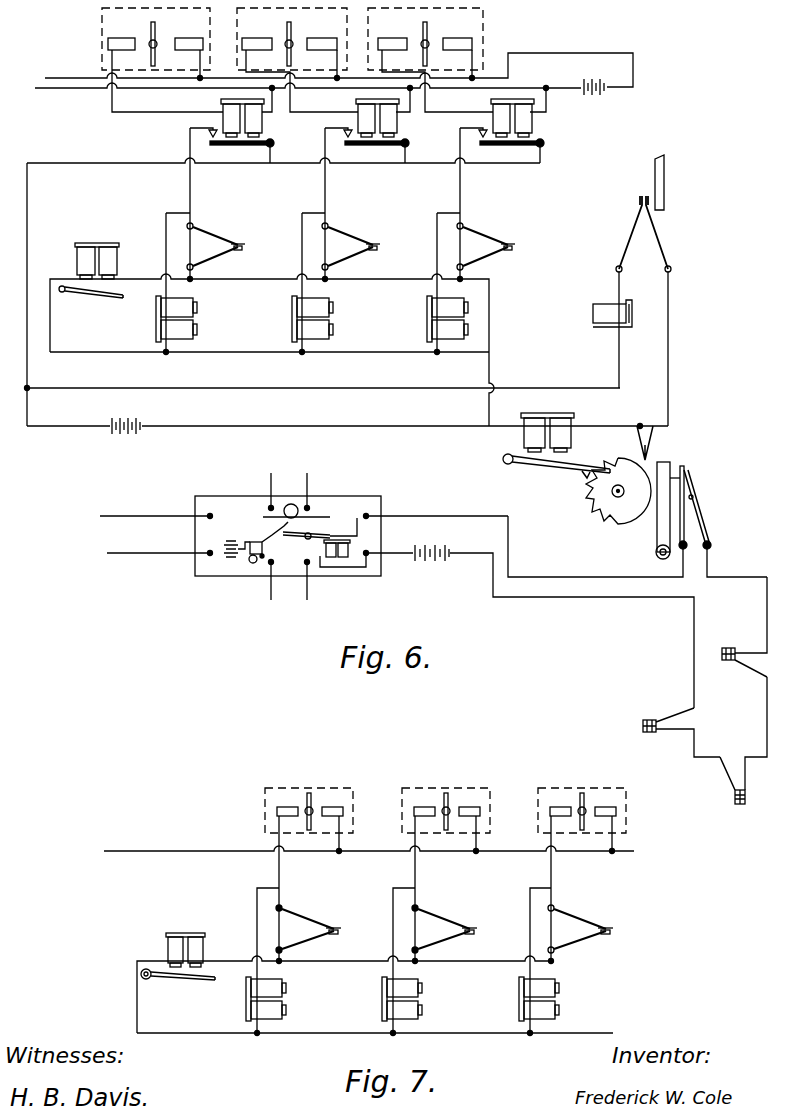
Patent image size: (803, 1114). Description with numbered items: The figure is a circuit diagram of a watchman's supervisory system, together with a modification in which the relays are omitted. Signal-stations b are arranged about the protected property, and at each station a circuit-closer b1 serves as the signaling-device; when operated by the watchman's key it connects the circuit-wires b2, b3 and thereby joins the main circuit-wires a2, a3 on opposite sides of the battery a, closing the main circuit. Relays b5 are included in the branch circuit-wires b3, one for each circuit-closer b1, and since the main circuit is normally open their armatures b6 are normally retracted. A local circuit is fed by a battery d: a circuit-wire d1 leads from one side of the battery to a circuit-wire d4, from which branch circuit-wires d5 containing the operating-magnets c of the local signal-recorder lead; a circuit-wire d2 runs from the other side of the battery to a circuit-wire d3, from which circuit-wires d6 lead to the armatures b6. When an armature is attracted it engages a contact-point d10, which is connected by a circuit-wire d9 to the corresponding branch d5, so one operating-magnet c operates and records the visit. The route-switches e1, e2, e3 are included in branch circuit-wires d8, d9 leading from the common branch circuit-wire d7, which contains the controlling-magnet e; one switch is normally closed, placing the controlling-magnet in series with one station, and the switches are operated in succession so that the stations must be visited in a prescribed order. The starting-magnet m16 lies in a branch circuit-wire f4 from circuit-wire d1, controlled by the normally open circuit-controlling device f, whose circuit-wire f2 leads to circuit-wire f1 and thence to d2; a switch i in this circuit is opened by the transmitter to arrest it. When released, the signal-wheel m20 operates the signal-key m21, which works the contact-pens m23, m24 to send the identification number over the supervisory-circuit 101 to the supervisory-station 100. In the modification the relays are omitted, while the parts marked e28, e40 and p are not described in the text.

In FIG. 6, the signal-station b is at (102, 32).
In FIG. 7, the signal-station b is at (265, 790).
In FIG. 6, the circuit-closer b1 is at (157, 30).
In FIG. 7, the circuit-closer b1 is at (311, 793).
In FIG. 6, the circuit-wire b2 is at (200, 60).
In FIG. 6, the branch circuit-wire b3 is at (113, 60).
In FIG. 6, the relay b5 is at (263, 122).
In FIG. 6, the armature b6 is at (248, 146).
In FIG. 6, the battery a is at (602, 96).
In FIG. 6, the main circuit-wire a2 is at (598, 47).
In FIG. 6, the main circuit-wire a3 is at (566, 87).
In FIG. 6, the battery d is at (128, 418).
In FIG. 6, the circuit-wire d1 is at (368, 428).
In FIG. 6, the circuit-wire d2 is at (80, 430).
In FIG. 6, the circuit-wire d3 is at (301, 166).
In FIG. 7, the circuit-wire d3 is at (178, 851).
In FIG. 6, the circuit-wire d4 is at (250, 352).
In FIG. 7, the circuit-wire d4 is at (348, 1033).
In FIG. 6, the branch circuit-wire d5 is at (166, 238).
In FIG. 7, the branch circuit-wire d5 is at (257, 903).
In FIG. 6, the circuit-wire d6 is at (272, 158).
In FIG. 6, the branch circuit-wire d7 is at (113, 352).
In FIG. 7, the branch circuit-wire d7 is at (190, 1033).
In FIG. 6, the branch circuit-wire d8 is at (210, 208).
In FIG. 7, the branch circuit-wire d8 is at (285, 902).
In FIG. 6, the circuit-wire d9 is at (190, 188).
In FIG. 7, the circuit-wire d9 is at (279, 871).
In FIG. 6, the contact-point d10 is at (212, 125).
In FIG. 6, the controlling-magnet e is at (115, 272).
In FIG. 7, the controlling-magnet e is at (166, 945).
In FIG. 6, the route-switch e1 is at (211, 236).
In FIG. 7, the route-switch e1 is at (316, 925).
In FIG. 6, the route-switch e2 is at (347, 238).
In FIG. 7, the route-switch e2 is at (449, 925).
In FIG. 6, the route-switch e3 is at (483, 238).
In FIG. 7, the route-switch e3 is at (585, 925).
In FIG. 6, the armature lever e28 is at (81, 300).
In FIG. 6, the contact plate e40 is at (664, 190).
In FIG. 6, the circuit-controlling device f is at (664, 236).
In FIG. 6, the circuit-wire f1 is at (445, 392).
In FIG. 6, the circuit-wire f2 is at (616, 286).
In FIG. 6, the branch circuit-wire f4 is at (672, 382).
In FIG. 6, the electromagnet p is at (593, 315).
In FIG. 6, the operating-magnet c is at (199, 317).
In FIG. 7, the operating-magnet c is at (410, 999).
In FIG. 6, the starting-magnet m16 is at (575, 420).
In FIG. 6, the signal-wheel m20 is at (618, 520).
In FIG. 6, the signal-key m21 is at (662, 526).
In FIG. 6, the contact-pen m23 is at (686, 474).
In FIG. 6, the contact-pen m24 is at (706, 502).
In FIG. 6, the switch i is at (658, 441).
In FIG. 6, the supervisory-station 100 is at (371, 496).
In FIG. 6, the supervisory-circuit 101 is at (597, 597).